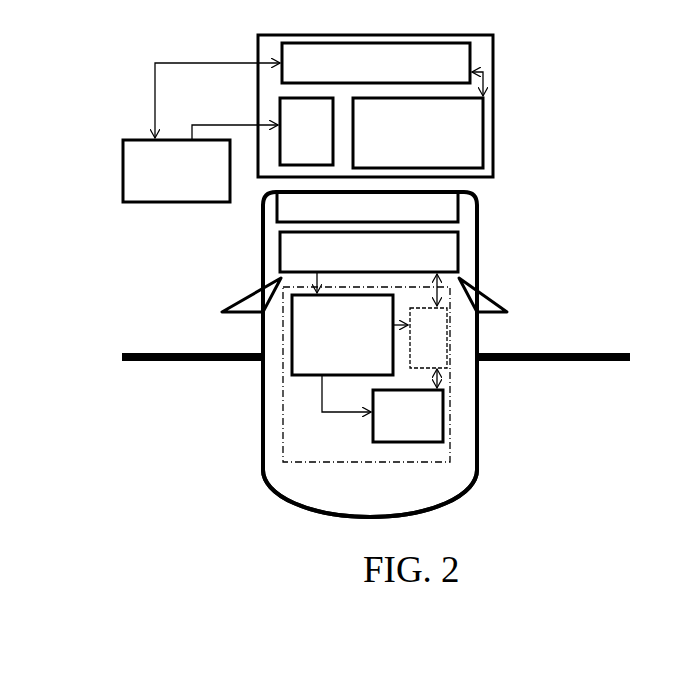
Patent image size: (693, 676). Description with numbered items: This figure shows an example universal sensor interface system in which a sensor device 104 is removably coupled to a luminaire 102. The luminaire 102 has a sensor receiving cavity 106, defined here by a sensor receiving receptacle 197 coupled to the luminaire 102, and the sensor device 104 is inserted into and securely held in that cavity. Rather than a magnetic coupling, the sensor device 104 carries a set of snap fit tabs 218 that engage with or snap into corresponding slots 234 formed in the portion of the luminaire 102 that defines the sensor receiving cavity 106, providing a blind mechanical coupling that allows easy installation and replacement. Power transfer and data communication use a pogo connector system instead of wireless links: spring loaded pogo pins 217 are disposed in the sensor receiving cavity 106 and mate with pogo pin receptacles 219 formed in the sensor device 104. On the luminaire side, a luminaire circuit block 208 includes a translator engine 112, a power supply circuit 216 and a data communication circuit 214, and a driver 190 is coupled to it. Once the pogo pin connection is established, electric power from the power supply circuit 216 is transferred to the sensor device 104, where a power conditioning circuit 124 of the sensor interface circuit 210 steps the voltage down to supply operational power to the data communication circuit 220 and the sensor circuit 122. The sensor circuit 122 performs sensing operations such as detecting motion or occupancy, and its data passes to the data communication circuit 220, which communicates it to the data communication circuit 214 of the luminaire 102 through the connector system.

The luminaire 102 is at (583, 339).
The sensor device 104 is at (382, 500).
The sensor receiving cavity 106 is at (462, 229).
The translator engine 112 is at (382, 72).
The sensor circuit 122 is at (421, 425).
The power conditioning circuit 124 is at (355, 346).
The driver 190 is at (190, 179).
The sensor receiving receptacle 197 is at (250, 251).
The external system 208 is at (495, 79).
The sensor interface circuit 210 is at (331, 453).
The data communication circuit 214 is at (427, 139).
The power supply circuit 216 is at (316, 140).
The spring loaded pogo pins 217 is at (383, 217).
The snap fit tabs 218 is at (240, 299).
The pogo pin receptacles 219 is at (383, 261).
The data communication circuit 220 is at (441, 348).
The slots 234 is at (484, 287).